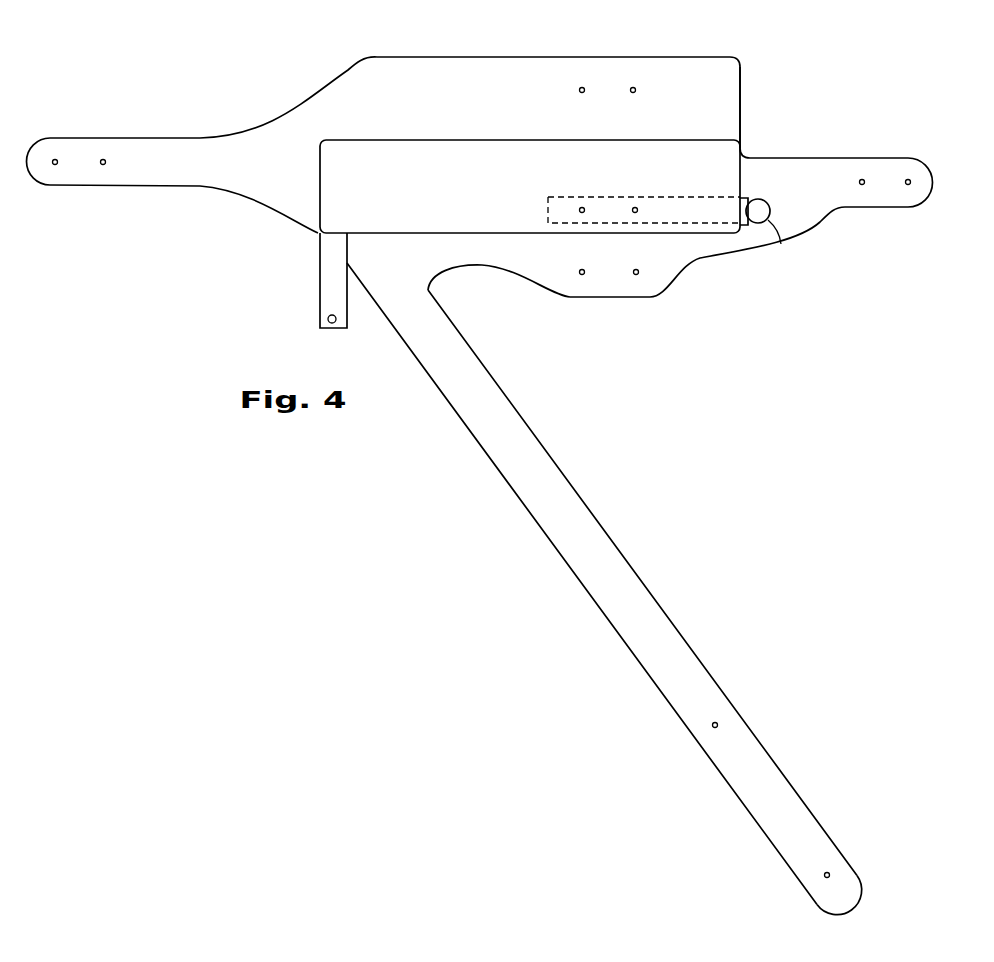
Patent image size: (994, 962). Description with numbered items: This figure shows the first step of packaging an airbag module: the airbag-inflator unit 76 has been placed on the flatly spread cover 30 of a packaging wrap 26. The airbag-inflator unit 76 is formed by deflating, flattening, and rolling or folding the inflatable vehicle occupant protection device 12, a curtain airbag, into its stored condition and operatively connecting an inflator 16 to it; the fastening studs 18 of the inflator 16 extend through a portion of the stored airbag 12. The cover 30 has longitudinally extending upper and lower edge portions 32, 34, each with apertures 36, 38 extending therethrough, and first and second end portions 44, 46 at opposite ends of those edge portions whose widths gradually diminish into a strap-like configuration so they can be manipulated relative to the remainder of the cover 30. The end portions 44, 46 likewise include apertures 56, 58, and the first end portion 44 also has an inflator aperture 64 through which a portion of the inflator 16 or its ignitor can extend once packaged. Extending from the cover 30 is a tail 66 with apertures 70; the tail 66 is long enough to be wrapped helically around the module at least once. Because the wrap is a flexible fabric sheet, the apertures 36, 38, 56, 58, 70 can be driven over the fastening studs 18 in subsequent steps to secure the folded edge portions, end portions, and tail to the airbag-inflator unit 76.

The inflatable vehicle occupant protection device 12 is at (423, 195).
The inflator 16 is at (755, 197).
The fastening studs 18 is at (718, 277).
The packaging wrap 26 is at (383, 72).
The cover 30 is at (463, 110).
The upper edge portion 32 is at (705, 83).
The lower edge portion 34 is at (657, 268).
The apertures 36 is at (582, 90).
The apertures 38 is at (582, 272).
The first end portion 44 is at (882, 168).
The second end portion 46 is at (138, 163).
The apertures 56 is at (915, 237).
The apertures 58 is at (108, 118).
The inflator aperture 64 is at (777, 232).
The tail 66 is at (587, 558).
The apertures 70 is at (857, 830).
The airbag-inflator unit 76 is at (465, 213).